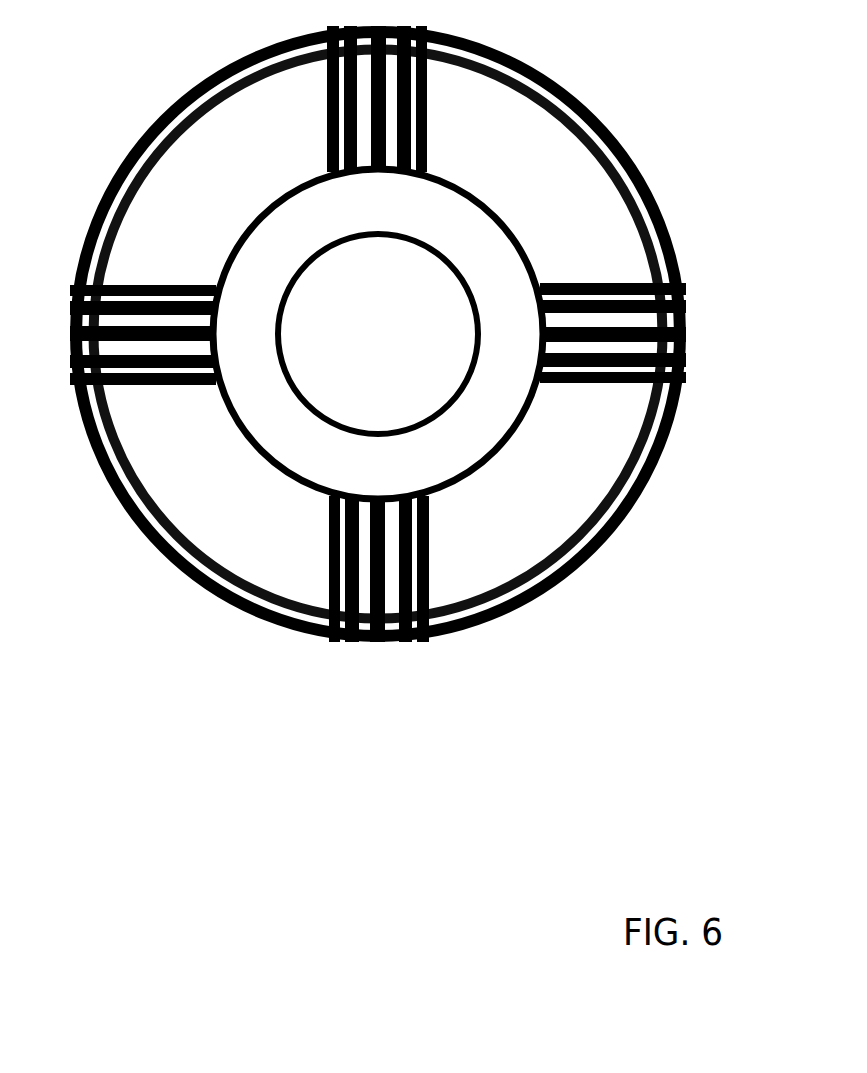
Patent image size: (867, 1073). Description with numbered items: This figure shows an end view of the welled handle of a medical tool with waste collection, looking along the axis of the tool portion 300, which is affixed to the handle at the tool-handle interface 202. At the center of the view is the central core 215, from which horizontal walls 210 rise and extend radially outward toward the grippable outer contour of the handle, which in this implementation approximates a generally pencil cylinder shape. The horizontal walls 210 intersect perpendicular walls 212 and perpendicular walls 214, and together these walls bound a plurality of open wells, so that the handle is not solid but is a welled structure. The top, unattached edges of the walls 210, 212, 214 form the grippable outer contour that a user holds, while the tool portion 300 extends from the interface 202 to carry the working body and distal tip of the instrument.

The horizontal wall 210 is at (686, 366).
The perpendicular wall 212 is at (531, 535).
The perpendicular wall 214 is at (332, 92).
The central core 215 is at (517, 238).
The tool-handle interface 202 is at (401, 468).
The tool portion 300 is at (388, 325).